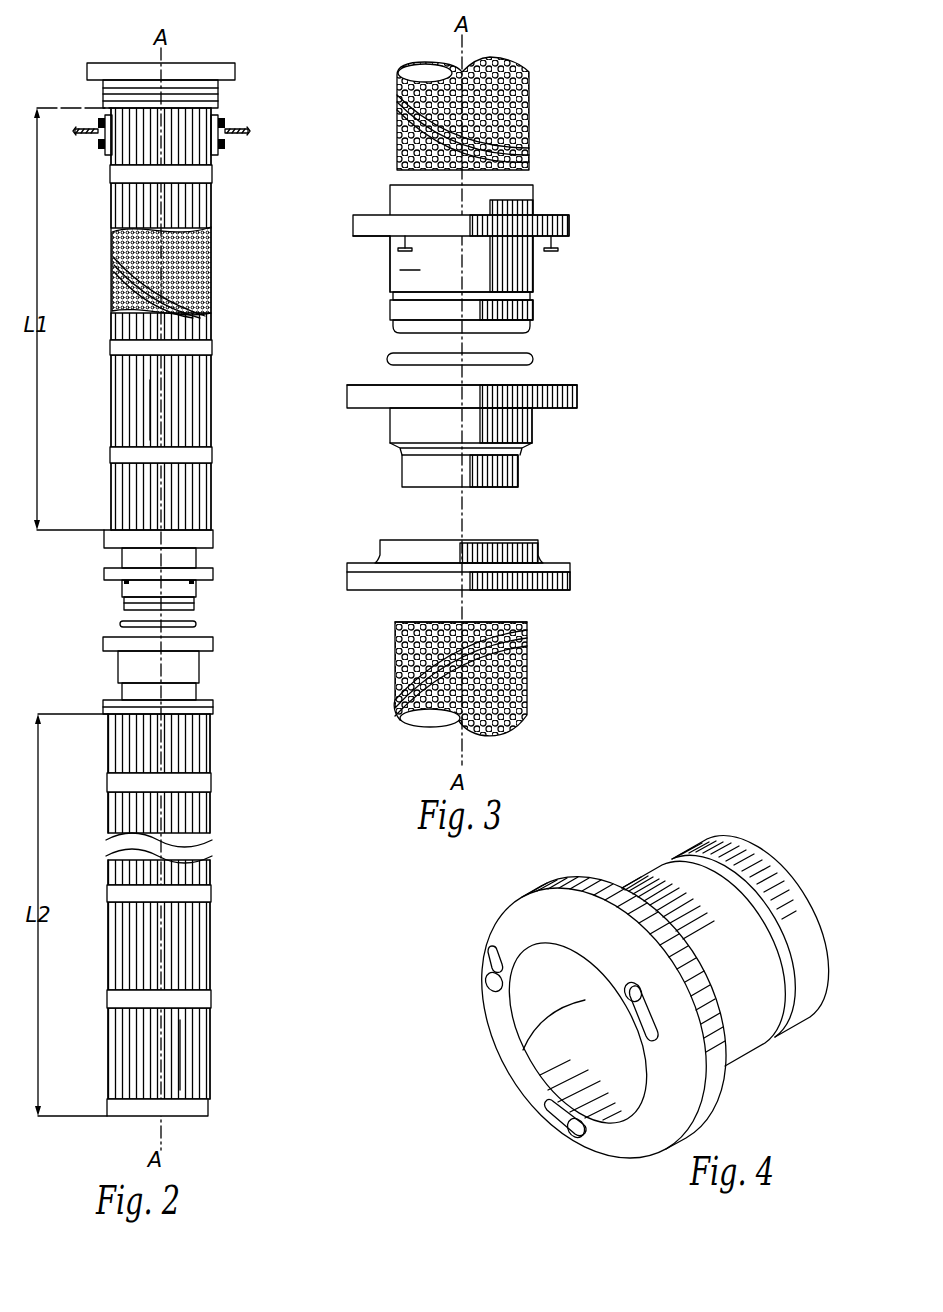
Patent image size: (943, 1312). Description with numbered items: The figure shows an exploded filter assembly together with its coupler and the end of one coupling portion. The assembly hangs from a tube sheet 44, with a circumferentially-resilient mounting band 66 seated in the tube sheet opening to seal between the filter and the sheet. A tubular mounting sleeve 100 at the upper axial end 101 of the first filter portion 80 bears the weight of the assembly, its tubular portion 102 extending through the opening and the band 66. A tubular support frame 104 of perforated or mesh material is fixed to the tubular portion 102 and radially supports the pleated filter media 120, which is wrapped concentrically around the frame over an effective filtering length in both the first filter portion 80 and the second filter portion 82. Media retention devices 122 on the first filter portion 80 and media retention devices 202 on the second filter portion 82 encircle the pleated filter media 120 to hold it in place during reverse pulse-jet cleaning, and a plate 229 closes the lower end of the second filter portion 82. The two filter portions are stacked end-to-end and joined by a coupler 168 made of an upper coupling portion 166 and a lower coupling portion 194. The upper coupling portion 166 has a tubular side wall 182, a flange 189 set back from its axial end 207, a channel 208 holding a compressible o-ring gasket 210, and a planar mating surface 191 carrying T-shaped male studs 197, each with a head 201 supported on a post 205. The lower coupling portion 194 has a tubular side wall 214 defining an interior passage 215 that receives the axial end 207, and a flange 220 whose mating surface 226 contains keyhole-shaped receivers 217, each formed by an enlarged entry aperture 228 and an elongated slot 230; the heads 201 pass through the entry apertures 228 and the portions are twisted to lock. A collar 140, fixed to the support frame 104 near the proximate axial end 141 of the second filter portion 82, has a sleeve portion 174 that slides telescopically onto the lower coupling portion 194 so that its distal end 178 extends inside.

In FIG. 2, the mounting sleeve 100 is at (235, 62).
In FIG. 2, the upper axial end 101 is at (108, 63).
In FIG. 2, the tubular portion 102 is at (103, 96).
In FIG. 2, the mounting band 66 is at (98, 120).
In FIG. 2, the tube sheet 44 is at (226, 124).
In FIG. 2, the media retention devices 122 is at (120, 174).
In FIG. 2, the tubular support frame 104 is at (210, 274).
In FIG. 3, the tubular support frame 104 is at (520, 682).
In FIG. 2, the first filter portion 80 is at (213, 384).
In FIG. 2, the pleated filter media 120 is at (186, 424).
In FIG. 2, the upper coupling portion 166 is at (214, 575).
In FIG. 3, the upper coupling portion 166 is at (480, 261).
In FIG. 2, the coupler 168 is at (117, 622).
In FIG. 3, the coupler 168 is at (533, 435).
In FIG. 2, the lower coupling portion 194 is at (201, 667).
In FIG. 3, the lower coupling portion 194 is at (485, 435).
In FIG. 4, the lower coupling portion 194 is at (630, 991).
In FIG. 2, the collar 140 is at (214, 706).
In FIG. 3, the collar 140 is at (505, 562).
In FIG. 2, the media retention devices 202 is at (198, 784).
In FIG. 2, the second filter portion 82 is at (211, 948).
In FIG. 2, the plate 229 is at (200, 1116).
In FIG. 3, the flange 189 is at (569, 222).
In FIG. 3, the mating surface 191 is at (362, 236).
In FIG. 3, the post 205 is at (558, 245).
In FIG. 3, the head 201 is at (560, 252).
In FIG. 3, the male studs 197 is at (390, 252).
In FIG. 3, the side wall 182 is at (420, 276).
In FIG. 3, the channel 208 is at (530, 300).
In FIG. 3, the axial end 207 is at (415, 328).
In FIG. 3, the mating surface 226 is at (380, 385).
In FIG. 4, the mating surface 226 is at (510, 928).
In FIG. 3, the o-ring gasket 210 is at (533, 359).
In FIG. 3, the flange 220 is at (577, 397).
In FIG. 4, the flange 220 is at (594, 1022).
In FIG. 3, the side wall 214 is at (410, 426).
In FIG. 4, the side wall 214 is at (743, 1035).
In FIG. 3, the distal end 178 is at (504, 487).
In FIG. 3, the sleeve portion 174 is at (543, 552).
In FIG. 3, the proximate axial end 141 is at (510, 622).
In FIG. 4, the interior passage 215 is at (542, 1021).
In FIG. 4, the elongated slot 230 is at (488, 961).
In FIG. 4, the entry aperture 228 is at (484, 986).
In FIG. 4, the keyhole-shaped receivers 217 is at (556, 1127).